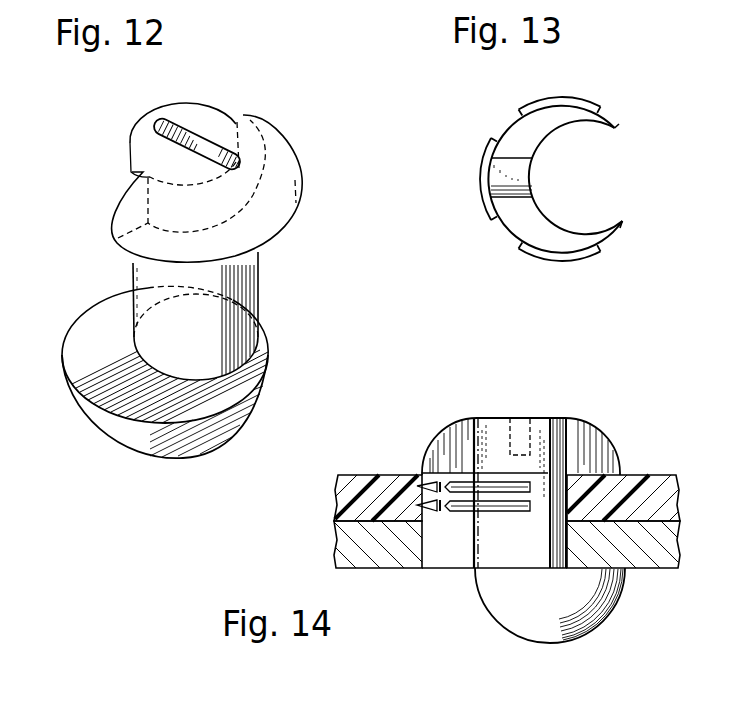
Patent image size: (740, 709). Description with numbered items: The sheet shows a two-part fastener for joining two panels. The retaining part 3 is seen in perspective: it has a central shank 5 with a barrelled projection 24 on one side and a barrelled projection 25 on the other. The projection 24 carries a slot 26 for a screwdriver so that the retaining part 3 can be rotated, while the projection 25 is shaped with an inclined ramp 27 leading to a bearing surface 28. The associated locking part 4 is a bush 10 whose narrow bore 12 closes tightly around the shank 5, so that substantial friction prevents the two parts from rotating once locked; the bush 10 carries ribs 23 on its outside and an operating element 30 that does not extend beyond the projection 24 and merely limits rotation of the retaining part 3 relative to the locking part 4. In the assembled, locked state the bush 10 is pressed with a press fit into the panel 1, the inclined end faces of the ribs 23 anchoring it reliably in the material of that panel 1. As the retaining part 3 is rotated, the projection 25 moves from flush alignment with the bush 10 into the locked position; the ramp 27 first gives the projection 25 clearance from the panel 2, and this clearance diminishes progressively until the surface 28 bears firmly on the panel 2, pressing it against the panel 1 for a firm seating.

In FIG. 14, the panel 1 is at (378, 487).
In FIG. 14, the panel 2 is at (340, 548).
In FIG. 12, the retaining part 3 is at (124, 147).
In FIG. 13, the locking part 4 is at (505, 240).
In FIG. 12, the shank 5 is at (148, 272).
In FIG. 14, the shank 5 is at (488, 430).
In FIG. 13, the bush 10 is at (513, 128).
In FIG. 14, the bush 10 is at (440, 557).
In FIG. 13, the bore 12 is at (550, 218).
In FIG. 13, the ribs 23 is at (578, 100).
In FIG. 14, the ribs 23 is at (462, 507).
In FIG. 12, the projection 24 is at (276, 141).
In FIG. 14, the projection 24 is at (600, 445).
In FIG. 12, the projection 25 is at (97, 420).
In FIG. 14, the projection 25 is at (513, 617).
In FIG. 12, the slot 26 is at (190, 138).
In FIG. 14, the slot 26 is at (520, 432).
In FIG. 12, the ramp 27 is at (266, 381).
In FIG. 12, the surface 28 is at (92, 328).
In FIG. 13, the operating element 30 is at (515, 176).
In FIG. 14, the operating element 30 is at (438, 438).